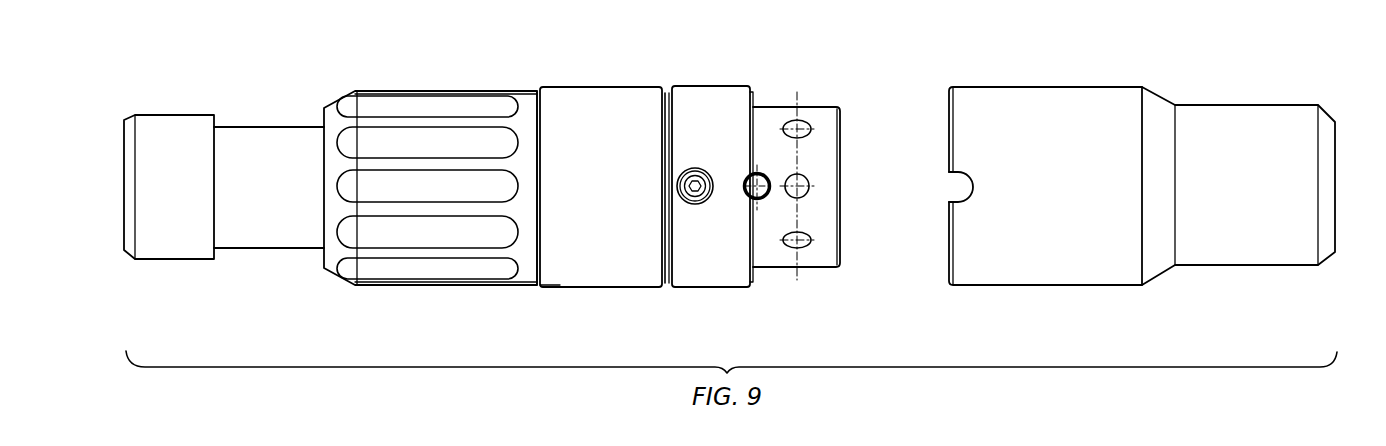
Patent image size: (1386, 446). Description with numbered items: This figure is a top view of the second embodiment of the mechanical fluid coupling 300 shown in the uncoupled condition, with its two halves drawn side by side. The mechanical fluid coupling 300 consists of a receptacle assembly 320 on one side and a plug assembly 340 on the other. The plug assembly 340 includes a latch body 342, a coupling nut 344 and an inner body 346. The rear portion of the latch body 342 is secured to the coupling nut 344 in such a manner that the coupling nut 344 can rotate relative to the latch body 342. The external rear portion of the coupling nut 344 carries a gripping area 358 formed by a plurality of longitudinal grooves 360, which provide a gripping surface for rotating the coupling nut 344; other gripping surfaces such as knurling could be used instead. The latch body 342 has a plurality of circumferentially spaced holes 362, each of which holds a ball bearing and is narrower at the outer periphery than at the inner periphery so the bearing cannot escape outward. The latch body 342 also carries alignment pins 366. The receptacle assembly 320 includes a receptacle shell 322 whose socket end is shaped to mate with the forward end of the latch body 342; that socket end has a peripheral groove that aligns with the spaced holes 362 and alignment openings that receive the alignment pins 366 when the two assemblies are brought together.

The mechanical fluid coupling 300 is at (891, 78).
The receptacle assembly 320 is at (1093, 80).
The receptacle shell 322 is at (981, 113).
The plug assembly 340 is at (559, 80).
The latch body 342 is at (827, 268).
The coupling nut 344 is at (552, 288).
The inner body 346 is at (267, 127).
The gripping area 358 is at (437, 106).
The longitudinal grooves 360 is at (373, 105).
The circumferentially spaced holes 362 is at (803, 122).
The alignment pins 366 is at (768, 174).